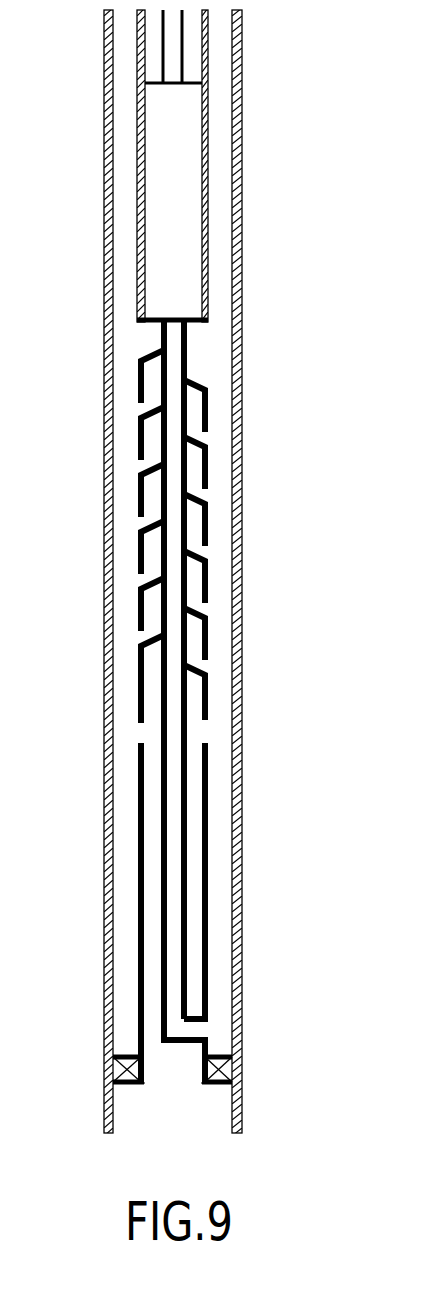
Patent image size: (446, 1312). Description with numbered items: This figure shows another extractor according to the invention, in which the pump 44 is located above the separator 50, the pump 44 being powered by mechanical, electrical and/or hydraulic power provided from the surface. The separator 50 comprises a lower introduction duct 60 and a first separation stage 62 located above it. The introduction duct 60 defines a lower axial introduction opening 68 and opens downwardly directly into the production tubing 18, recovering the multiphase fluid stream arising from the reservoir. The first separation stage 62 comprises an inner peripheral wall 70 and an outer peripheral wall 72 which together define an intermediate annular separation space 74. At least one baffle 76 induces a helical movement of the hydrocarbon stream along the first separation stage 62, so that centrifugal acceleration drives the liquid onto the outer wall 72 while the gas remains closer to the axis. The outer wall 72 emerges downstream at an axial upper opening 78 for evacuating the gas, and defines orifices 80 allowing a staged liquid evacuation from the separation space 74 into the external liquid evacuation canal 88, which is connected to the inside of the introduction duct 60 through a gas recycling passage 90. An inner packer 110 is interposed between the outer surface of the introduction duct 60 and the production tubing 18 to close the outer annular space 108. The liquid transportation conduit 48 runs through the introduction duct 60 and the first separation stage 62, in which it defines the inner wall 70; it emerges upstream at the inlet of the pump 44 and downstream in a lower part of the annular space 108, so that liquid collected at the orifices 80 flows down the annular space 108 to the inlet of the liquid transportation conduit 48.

The production tubing 18 is at (103, 365).
The pump 44 is at (187, 223).
The liquid transportation conduit 48 is at (160, 902).
The separator 50 is at (140, 522).
The introduction duct 60 is at (138, 815).
The first separation stage 62 is at (208, 433).
The lower axial introduction opening 68 is at (175, 1075).
The inner peripheral wall 70 is at (187, 518).
The outer peripheral wall 72 is at (209, 584).
The intermediate annular separation space 74 is at (193, 638).
The baffle 76 is at (146, 351).
The axial upper opening 78 is at (197, 368).
The orifice 80 is at (138, 407).
The external liquid evacuation canal 88 is at (218, 469).
The gas recycling passage 90 is at (138, 737).
The outer annular space 108 is at (218, 863).
The inner packer 110 is at (118, 1067).